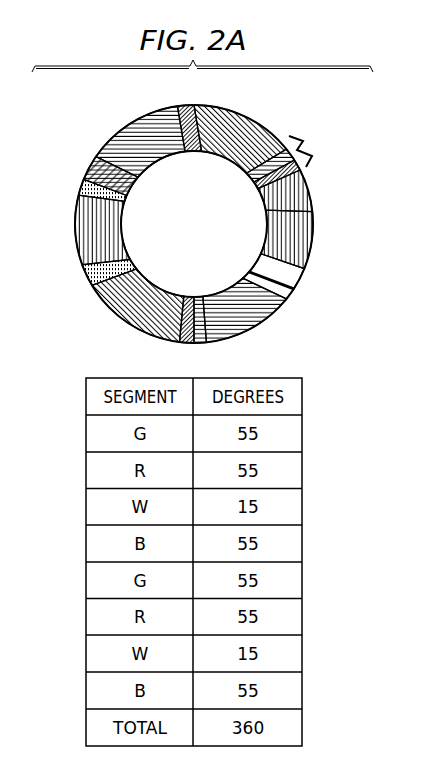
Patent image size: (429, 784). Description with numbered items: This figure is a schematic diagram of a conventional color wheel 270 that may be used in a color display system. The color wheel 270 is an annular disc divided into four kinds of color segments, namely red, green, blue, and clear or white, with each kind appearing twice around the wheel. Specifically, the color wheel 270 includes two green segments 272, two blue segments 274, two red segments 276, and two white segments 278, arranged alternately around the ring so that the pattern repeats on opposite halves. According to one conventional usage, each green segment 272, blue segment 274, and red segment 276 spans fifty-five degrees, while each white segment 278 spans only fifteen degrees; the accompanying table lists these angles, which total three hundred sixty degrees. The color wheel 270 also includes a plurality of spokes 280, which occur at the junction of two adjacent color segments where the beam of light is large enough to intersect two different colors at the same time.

The color wheel 270 is at (88, 330).
The green segments 272 is at (252, 127).
The blue segments 274 is at (138, 123).
The red segments 276 is at (313, 212).
The white segments 278 is at (303, 288).
The spokes 280 is at (315, 144).